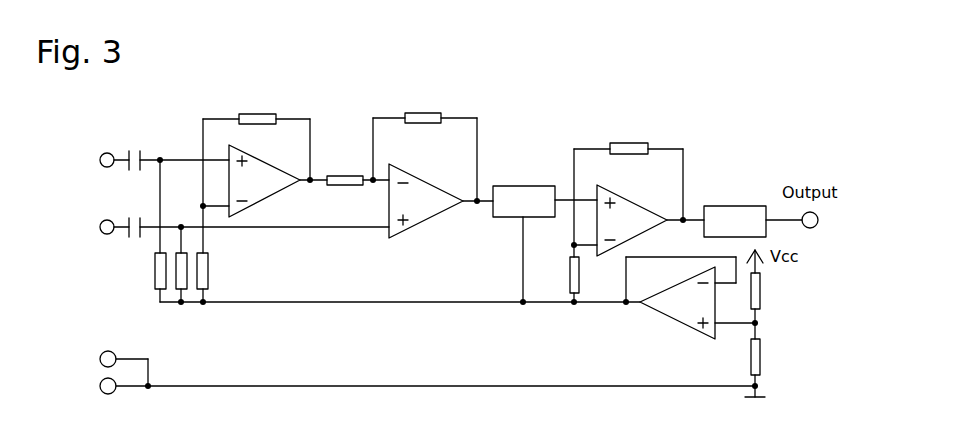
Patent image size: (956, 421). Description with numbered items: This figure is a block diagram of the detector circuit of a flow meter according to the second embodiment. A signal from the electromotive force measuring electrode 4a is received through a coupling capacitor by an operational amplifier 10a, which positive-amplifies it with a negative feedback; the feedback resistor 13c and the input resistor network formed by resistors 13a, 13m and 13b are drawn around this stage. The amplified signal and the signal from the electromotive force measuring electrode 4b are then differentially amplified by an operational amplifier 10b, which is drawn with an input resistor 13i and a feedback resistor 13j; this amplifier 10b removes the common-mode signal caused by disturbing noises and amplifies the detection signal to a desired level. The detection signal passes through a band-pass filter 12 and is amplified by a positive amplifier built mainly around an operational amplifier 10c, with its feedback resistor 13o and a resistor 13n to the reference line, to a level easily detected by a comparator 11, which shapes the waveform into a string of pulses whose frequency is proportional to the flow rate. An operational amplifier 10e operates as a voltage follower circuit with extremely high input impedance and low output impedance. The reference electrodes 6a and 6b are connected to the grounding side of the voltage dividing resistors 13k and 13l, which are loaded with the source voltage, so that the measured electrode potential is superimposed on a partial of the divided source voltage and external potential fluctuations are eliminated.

The electromotive force measuring electrode 4a is at (115, 159).
The electromotive force measuring electrode 4b is at (125, 226).
The reference electrode 6a is at (95, 350).
The reference electrode 6b is at (95, 396).
The operational amplifier 10a is at (264, 177).
The operational amplifier 10b is at (426, 195).
The operational amplifier 10c is at (632, 218).
The operational amplifier 10e is at (690, 298).
The comparator 11 is at (735, 221).
The band-pass filter 12 is at (524, 201).
The resistor 13a is at (141, 271).
The resistor 13b is at (223, 271).
The feedback resistor 13c is at (256, 147).
The resistor 13i is at (346, 167).
The feedback resistor 13j is at (425, 144).
The voltage dividing resistor 13k is at (775, 306).
The voltage dividing resistor 13l is at (776, 357).
The resistor 13m is at (194, 292).
The resistor 13n is at (556, 275).
The feedback resistor 13o is at (628, 181).